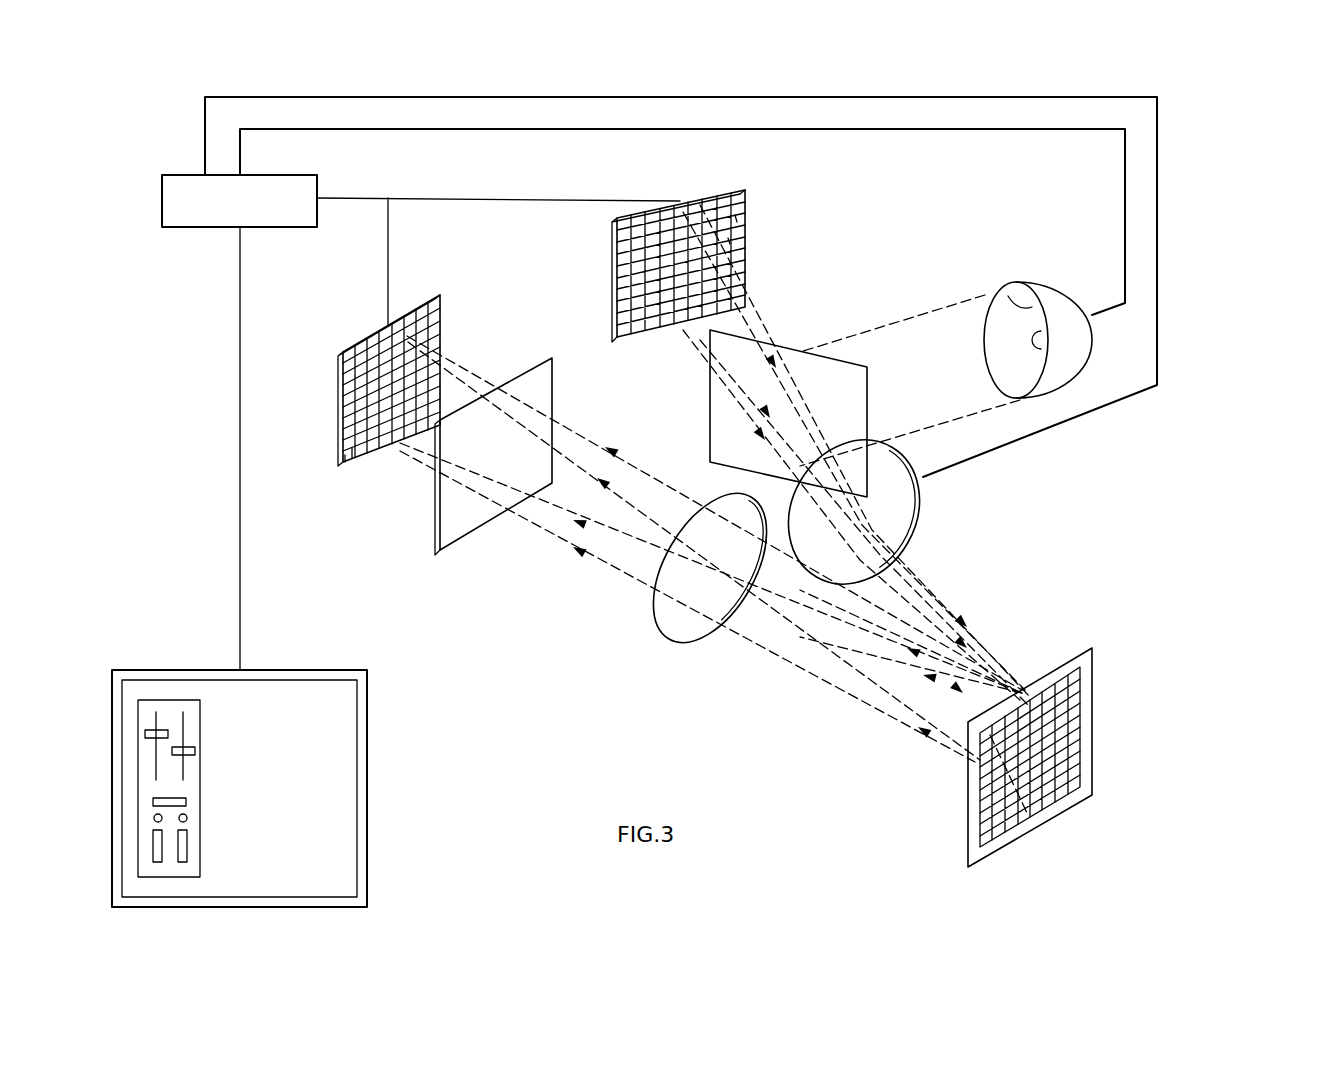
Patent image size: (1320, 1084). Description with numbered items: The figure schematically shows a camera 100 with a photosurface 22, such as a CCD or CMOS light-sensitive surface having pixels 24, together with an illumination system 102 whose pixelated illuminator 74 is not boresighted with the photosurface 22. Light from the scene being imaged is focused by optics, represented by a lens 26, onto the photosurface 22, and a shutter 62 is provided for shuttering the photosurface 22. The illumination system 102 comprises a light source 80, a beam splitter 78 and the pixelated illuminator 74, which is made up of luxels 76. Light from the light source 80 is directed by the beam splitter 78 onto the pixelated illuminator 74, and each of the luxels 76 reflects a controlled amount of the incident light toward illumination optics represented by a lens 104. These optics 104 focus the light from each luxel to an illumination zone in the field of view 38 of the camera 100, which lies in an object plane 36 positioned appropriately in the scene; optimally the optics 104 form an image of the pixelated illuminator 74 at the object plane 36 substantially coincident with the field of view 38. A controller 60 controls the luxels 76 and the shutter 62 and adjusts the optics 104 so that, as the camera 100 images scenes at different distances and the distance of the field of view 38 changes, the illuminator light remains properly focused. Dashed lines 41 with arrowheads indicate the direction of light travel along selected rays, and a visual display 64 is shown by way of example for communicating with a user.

The camera 100 is at (1220, 166).
The illumination system 102 is at (1072, 458).
The controller 60 is at (302, 174).
The visual display 64 is at (380, 688).
The photosurface 22 is at (410, 298).
The pixels 24 is at (372, 463).
The shutter 62 is at (448, 568).
The pixelated illuminator 74 is at (717, 190).
The luxels 76 is at (730, 240).
The beam splitter 78 is at (790, 350).
The light source 80 is at (1038, 340).
The optics 104 is at (838, 564).
The lens 26 is at (720, 604).
The object plane 36 is at (1068, 657).
The field of view 38 is at (1100, 680).
The dashed lines 41 is at (705, 353).